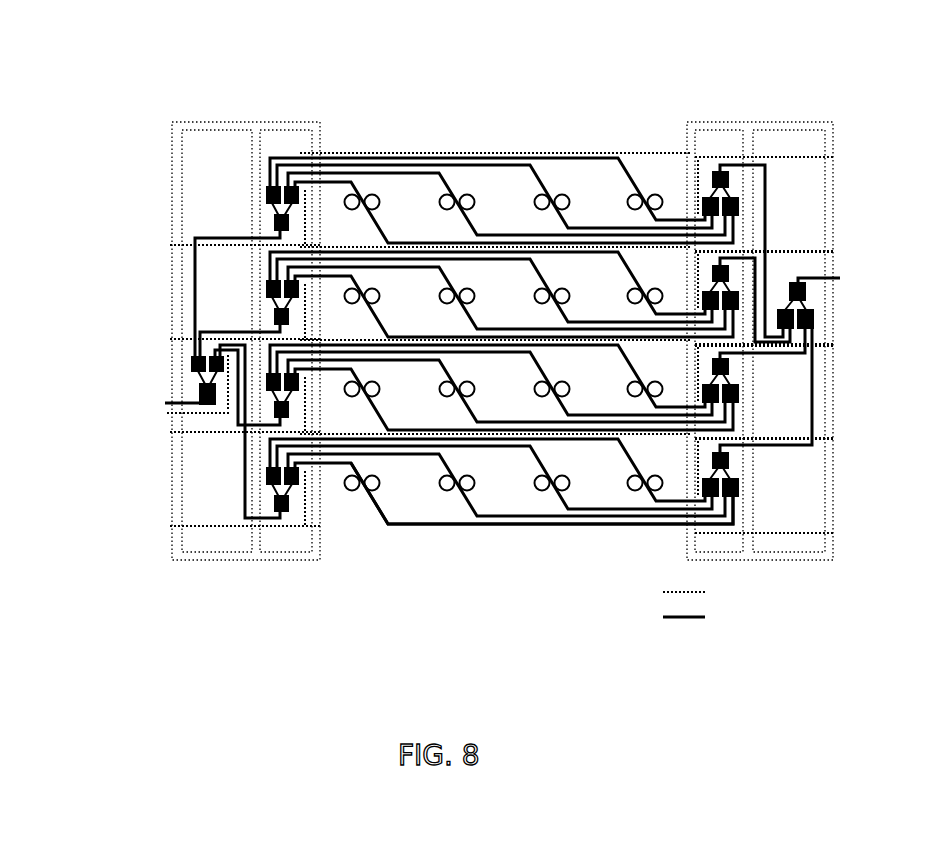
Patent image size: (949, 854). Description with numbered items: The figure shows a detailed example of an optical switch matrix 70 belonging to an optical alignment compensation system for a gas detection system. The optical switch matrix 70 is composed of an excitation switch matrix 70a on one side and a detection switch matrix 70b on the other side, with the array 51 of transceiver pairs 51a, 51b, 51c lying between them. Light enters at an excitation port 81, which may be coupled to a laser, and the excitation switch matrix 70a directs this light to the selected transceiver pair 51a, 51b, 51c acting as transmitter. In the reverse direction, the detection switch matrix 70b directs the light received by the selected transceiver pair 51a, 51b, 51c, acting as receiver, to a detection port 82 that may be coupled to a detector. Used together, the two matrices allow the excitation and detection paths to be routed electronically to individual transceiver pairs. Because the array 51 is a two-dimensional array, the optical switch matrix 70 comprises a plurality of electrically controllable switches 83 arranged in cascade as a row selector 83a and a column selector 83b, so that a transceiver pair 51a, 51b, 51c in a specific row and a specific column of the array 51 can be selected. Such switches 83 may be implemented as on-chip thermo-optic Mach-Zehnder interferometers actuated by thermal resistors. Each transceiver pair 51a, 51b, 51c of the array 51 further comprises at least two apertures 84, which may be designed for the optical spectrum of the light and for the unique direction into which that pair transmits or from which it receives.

The optical switch matrix 70 is at (505, 68).
The excitation switch matrix 70a is at (182, 118).
The detection switch matrix 70b is at (695, 118).
The row selector 83a is at (250, 128).
The column selector 83b is at (300, 140).
The electrically controllable switches 83 is at (190, 366).
The excitation port 81 is at (165, 405).
The detection port 82 is at (850, 278).
The array of transceiver pairs 51 is at (360, 140).
The transceiver pair 51a is at (461, 185).
The transceiver pair 51b is at (555, 185).
The transceiver pair 51c is at (650, 185).
The apertures 84 is at (450, 503).